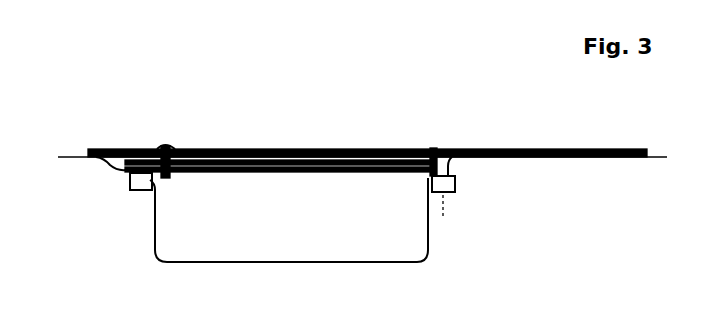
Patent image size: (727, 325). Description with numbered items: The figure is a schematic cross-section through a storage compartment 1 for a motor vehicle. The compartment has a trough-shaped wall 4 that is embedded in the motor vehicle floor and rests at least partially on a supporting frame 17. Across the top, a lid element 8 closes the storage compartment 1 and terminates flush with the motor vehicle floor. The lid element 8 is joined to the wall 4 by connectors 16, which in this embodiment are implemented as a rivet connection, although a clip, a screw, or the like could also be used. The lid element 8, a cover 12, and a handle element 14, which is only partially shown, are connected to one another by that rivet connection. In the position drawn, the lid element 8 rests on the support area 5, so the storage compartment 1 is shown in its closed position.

The storage compartment 1 is at (432, 74).
The trough-shaped wall 4 is at (434, 249).
The support area 5 is at (97, 175).
The lid element 8 is at (258, 160).
The cover 12 is at (322, 149).
The handle element 14 is at (78, 153).
The connector 16 is at (169, 138).
The supporting frame 17 is at (128, 190).